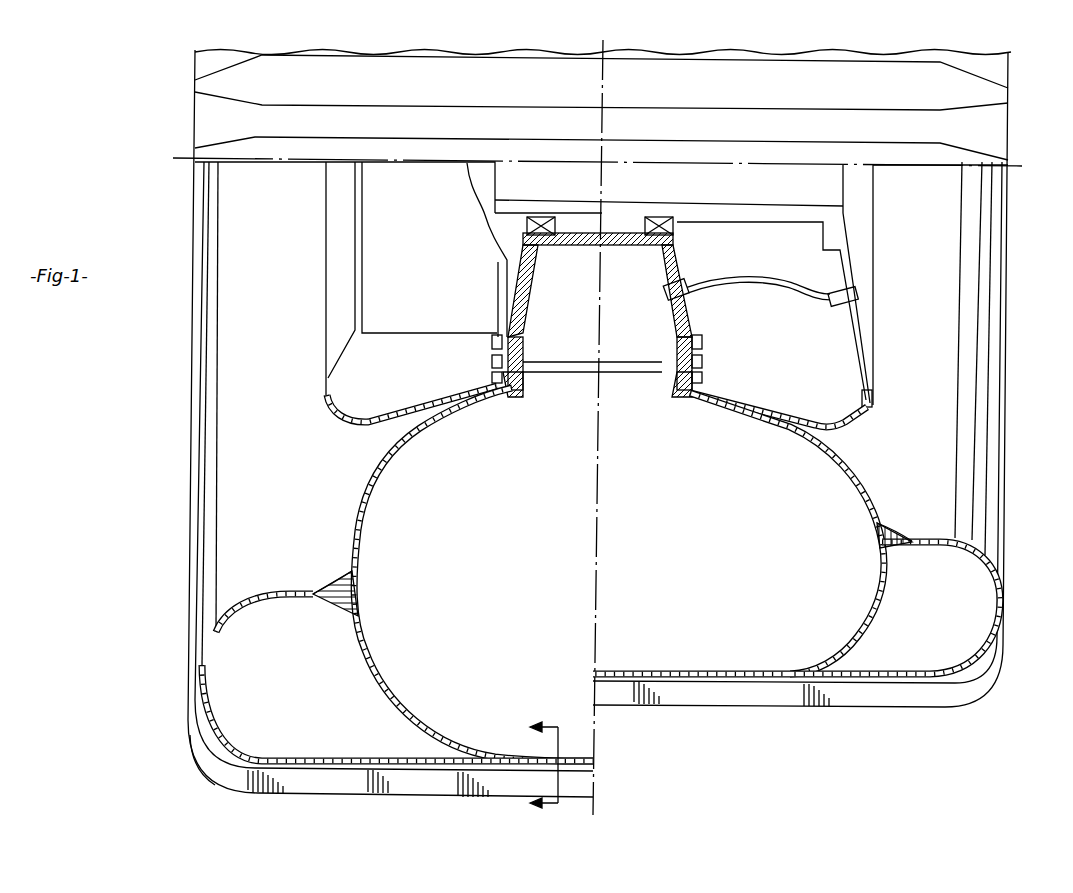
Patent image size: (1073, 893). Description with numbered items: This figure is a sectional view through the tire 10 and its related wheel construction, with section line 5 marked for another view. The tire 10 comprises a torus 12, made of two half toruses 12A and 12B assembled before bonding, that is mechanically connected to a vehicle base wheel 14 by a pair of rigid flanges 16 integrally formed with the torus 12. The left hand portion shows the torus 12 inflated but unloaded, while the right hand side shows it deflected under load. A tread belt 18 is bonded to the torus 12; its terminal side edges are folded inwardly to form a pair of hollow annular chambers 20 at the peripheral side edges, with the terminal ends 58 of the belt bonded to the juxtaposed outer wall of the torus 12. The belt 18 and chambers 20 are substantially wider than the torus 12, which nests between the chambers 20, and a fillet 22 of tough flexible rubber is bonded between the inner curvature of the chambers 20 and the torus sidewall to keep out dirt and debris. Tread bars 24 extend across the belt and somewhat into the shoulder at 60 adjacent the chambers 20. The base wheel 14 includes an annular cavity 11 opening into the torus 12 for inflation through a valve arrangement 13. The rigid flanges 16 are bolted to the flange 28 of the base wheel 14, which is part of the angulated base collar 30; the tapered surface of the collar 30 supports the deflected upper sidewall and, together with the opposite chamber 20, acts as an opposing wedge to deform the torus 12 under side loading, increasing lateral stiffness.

The section line 5- 5 is at (532, 767).
The tire 10 is at (1017, 229).
The annular cavity 11 is at (597, 427).
The torus 12 is at (363, 503).
The half torus 12A is at (393, 463).
The half torus 12B is at (842, 478).
The valve arrangement 13 is at (848, 272).
The vehicle base wheel 14 is at (690, 314).
The rigid flanges 16 is at (523, 380).
The tread belt 18 is at (342, 780).
The hollow annular chambers 20 is at (250, 672).
The fillet 22 is at (333, 590).
The tread bars 24 is at (193, 92).
The flange 28 is at (492, 372).
The angulated base collar 30 is at (408, 408).
The terminal ends 58 is at (440, 750).
The shoulder 60 is at (197, 757).